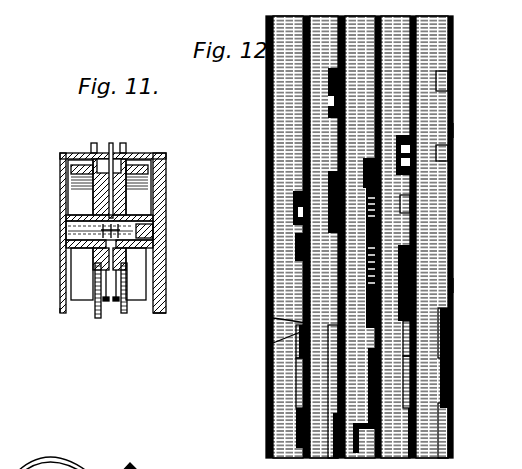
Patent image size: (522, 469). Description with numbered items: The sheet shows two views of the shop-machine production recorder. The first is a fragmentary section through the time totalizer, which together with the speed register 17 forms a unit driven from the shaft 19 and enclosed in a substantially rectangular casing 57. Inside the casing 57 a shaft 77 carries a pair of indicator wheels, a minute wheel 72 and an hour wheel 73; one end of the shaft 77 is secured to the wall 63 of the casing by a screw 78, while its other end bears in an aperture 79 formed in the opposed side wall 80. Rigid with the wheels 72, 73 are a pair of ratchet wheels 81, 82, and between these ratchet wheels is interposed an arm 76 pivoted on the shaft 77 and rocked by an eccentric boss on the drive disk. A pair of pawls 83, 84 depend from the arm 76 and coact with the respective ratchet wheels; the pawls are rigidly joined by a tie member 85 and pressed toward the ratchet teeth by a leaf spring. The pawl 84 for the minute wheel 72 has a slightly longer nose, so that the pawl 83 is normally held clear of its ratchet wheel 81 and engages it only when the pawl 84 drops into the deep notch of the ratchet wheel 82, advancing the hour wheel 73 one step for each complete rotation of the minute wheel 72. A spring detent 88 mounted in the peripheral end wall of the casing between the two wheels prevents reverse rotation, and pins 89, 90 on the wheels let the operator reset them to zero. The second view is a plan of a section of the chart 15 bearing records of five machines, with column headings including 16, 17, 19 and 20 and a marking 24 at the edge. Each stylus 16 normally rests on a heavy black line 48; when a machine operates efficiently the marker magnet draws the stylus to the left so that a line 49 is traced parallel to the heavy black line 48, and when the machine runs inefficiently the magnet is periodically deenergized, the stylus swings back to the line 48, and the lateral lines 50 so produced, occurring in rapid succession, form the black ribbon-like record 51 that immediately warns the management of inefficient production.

In FIG. 12, the record chart 15 is at (341, 237).
In FIG. 12, the stylus 16 is at (288, 237).
In FIG. 12, the speed register 17 is at (324, 237).
In FIG. 12, the shaft 19 is at (395, 237).
In FIG. 12, the recording pen trace 20 is at (432, 237).
In FIG. 11, the pile 24 is at (76, 455).
In FIG. 12, the heavy black line 48 is at (297, 158).
In FIG. 12, the line 49 is at (265, 310).
In FIG. 12, the lateral lines 50 is at (265, 335).
In FIG. 12, the ribbon-like record 51 is at (445, 125).
In FIG. 11, the casing 57 is at (50, 160).
In FIG. 11, the wall 63 is at (158, 258).
In FIG. 11, the minute indicator wheel 72 is at (65, 275).
In FIG. 11, the hour indicator wheel 73 is at (138, 280).
In FIG. 11, the arm 76 is at (104, 150).
In FIG. 11, the shaft 77 is at (62, 218).
In FIG. 11, the screw 78 is at (158, 210).
In FIG. 11, the aperture 79 is at (58, 222).
In FIG. 11, the side wall 80 is at (58, 197).
In FIG. 11, the ratchet wheel 81 is at (120, 293).
In FIG. 11, the ratchet wheel 82 is at (88, 290).
In FIG. 11, the pawl 83 is at (62, 243).
In FIG. 11, the pawl 84 is at (165, 238).
In FIG. 11, the tie member 85 is at (87, 254).
In FIG. 11, the spring detent 88 is at (93, 148).
In FIG. 11, the pin 89 is at (108, 295).
In FIG. 11, the pin 90 is at (98, 295).